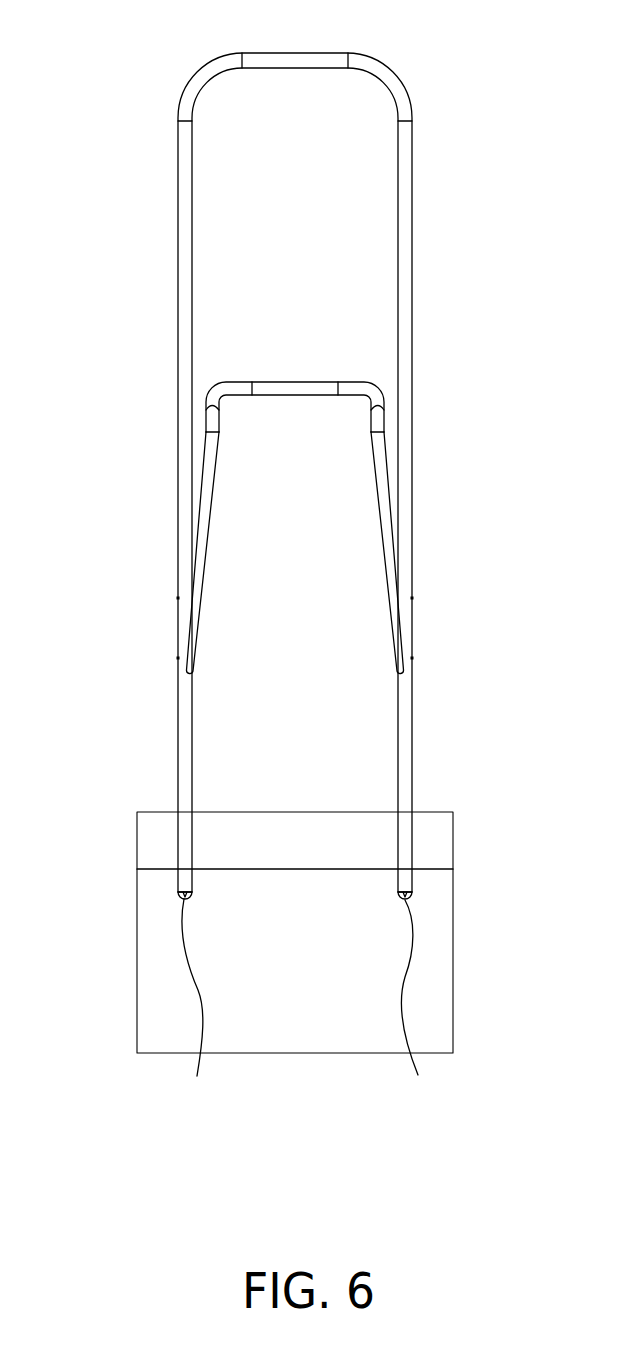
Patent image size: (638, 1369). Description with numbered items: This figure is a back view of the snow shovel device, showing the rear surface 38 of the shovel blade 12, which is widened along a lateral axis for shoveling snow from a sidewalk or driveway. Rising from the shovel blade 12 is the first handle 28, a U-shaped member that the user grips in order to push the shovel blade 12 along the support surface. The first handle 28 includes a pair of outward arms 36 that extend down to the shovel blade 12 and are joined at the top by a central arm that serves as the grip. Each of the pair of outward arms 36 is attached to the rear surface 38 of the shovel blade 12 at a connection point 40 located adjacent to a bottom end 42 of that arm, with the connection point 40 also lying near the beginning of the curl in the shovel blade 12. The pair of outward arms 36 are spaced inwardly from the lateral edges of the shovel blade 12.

The shovel blade 12 is at (472, 786).
The first handle 28 is at (142, 192).
The pair of outward arms 36 is at (178, 626).
The rear surface 38 is at (152, 974).
The connection point 40 is at (178, 880).
The bottom end 42 is at (309, 1001).